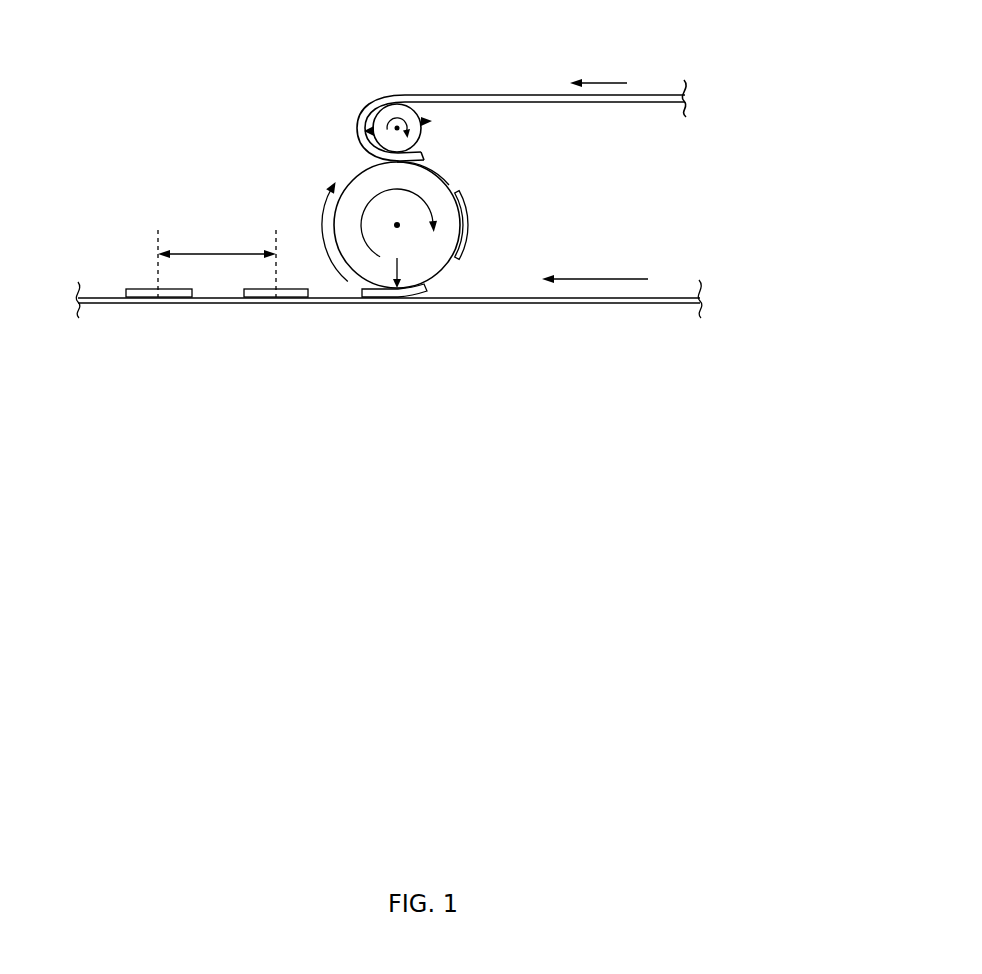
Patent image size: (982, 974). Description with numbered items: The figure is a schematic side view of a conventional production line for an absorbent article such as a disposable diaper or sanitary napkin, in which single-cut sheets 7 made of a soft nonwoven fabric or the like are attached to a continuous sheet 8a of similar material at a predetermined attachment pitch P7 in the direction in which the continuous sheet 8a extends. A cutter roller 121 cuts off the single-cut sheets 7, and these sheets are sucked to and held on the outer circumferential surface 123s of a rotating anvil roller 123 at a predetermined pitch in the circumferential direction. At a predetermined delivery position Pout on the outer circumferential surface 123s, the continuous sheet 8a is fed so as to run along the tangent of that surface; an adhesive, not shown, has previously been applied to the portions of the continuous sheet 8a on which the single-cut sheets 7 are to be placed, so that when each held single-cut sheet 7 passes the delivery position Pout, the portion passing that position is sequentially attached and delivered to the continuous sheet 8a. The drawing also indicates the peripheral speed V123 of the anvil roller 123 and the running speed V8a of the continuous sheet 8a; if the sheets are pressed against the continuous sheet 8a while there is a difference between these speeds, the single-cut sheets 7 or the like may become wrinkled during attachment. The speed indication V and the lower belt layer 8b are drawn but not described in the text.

The cutter roller 121 is at (436, 132).
The anvil roller 123 is at (349, 166).
The outer circumferential surface 123s is at (449, 185).
The single-cut sheet 7 is at (130, 288).
The continuous sheet 8a is at (389, 334).
The conveyor belt lower layer 8b is at (203, 312).
The belt conveying speed V is at (598, 73).
The peripheral speed V123 is at (306, 232).
The attachment pitch P7 is at (217, 263).
The delivery position Pout is at (417, 262).
The running speed V8a is at (596, 266).